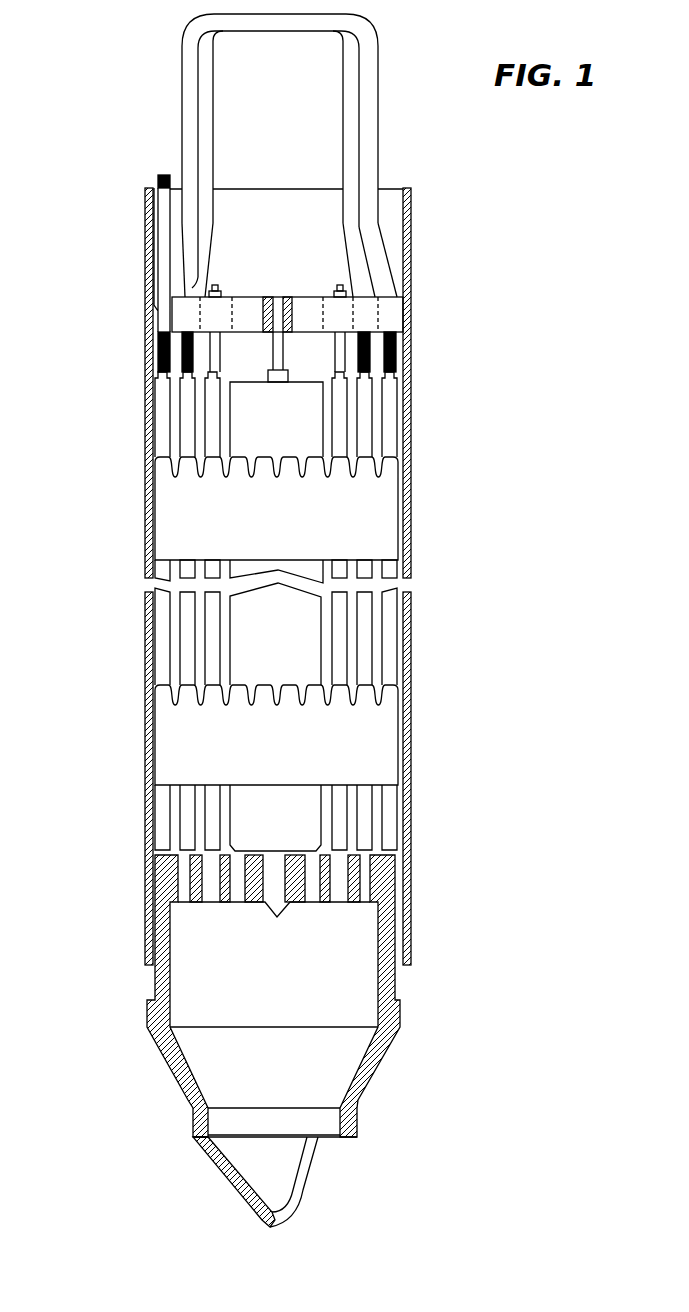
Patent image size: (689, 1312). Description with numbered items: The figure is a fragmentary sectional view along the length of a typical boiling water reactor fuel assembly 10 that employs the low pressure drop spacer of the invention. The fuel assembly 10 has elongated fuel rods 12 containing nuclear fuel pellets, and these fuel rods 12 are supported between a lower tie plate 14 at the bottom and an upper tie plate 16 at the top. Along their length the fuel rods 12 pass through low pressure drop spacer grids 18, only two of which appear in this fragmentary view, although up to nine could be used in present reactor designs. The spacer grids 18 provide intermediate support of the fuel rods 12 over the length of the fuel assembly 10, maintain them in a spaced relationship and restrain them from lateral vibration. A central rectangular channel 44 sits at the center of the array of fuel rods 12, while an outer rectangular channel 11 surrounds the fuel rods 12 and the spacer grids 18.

The boiling water reactor fuel assembly 10 is at (118, 526).
The outer rectangular channel 11 is at (415, 506).
The fuel rods 12 is at (363, 407).
The lower tie plate 14 is at (357, 1006).
The upper tie plate 16 is at (399, 320).
The low pressure drop spacer grids 18 is at (380, 540).
The central rectangular channel 44 is at (305, 633).